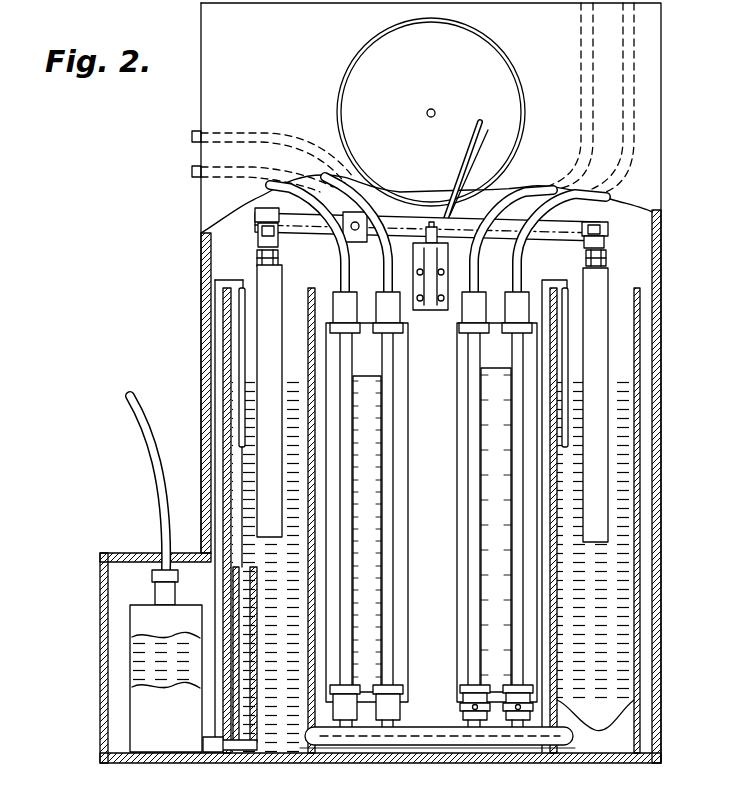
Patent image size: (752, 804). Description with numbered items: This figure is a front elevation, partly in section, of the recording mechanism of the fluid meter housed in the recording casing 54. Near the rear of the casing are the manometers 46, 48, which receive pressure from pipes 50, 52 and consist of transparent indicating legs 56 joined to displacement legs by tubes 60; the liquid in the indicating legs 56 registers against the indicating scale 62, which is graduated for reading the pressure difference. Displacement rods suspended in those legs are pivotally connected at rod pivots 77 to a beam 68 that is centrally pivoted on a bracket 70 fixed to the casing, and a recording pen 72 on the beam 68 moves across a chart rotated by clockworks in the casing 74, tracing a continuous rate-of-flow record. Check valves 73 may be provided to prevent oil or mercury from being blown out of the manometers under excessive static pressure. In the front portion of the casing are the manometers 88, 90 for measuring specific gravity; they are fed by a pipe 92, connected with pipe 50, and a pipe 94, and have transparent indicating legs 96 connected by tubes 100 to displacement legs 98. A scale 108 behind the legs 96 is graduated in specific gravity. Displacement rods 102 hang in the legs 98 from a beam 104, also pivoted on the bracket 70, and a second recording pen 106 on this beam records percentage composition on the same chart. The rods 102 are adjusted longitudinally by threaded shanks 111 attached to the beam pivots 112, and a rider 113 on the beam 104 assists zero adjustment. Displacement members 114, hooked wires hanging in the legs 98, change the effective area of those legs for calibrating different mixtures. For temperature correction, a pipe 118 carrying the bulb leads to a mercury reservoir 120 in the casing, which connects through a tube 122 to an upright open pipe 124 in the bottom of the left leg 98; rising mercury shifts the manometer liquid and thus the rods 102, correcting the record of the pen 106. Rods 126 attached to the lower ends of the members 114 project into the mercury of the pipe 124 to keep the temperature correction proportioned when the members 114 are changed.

The manometer 46 is at (477, 330).
The manometer 48 is at (518, 323).
The pipe 50 is at (581, 18).
The pipe 52 is at (622, 30).
The recording casing 54 is at (662, 632).
The indicating legs 56 is at (518, 412).
The tubes 60 is at (384, 745).
The indicating scale 62 is at (487, 551).
The beam 68 is at (283, 205).
The bracket 70 is at (447, 310).
The recording pen 72 is at (497, 127).
The check valves 73 is at (465, 705).
The casing 74 is at (514, 63).
The rod pivots 77 is at (258, 213).
The manometer 88 is at (395, 330).
The manometer 90 is at (333, 318).
The pipe 92 is at (199, 131).
The pipe 94 is at (198, 178).
The indicating legs 96 is at (349, 519).
The displacement legs 98 is at (212, 380).
The tubes 100 is at (340, 746).
The displacement rods 102 is at (272, 284).
The beam 104 is at (305, 223).
The recording pen 106 is at (462, 166).
The scale 108 is at (376, 482).
The threaded shanks 111 is at (258, 254).
The beam pivots 112 is at (258, 236).
The rider 113 is at (357, 242).
The displacement members 114 is at (243, 307).
The pipe 118 is at (150, 457).
The mercury reservoir 120 is at (141, 716).
The tube 122 is at (214, 746).
The upright open pipe 124 is at (238, 590).
The rods 126 is at (237, 487).